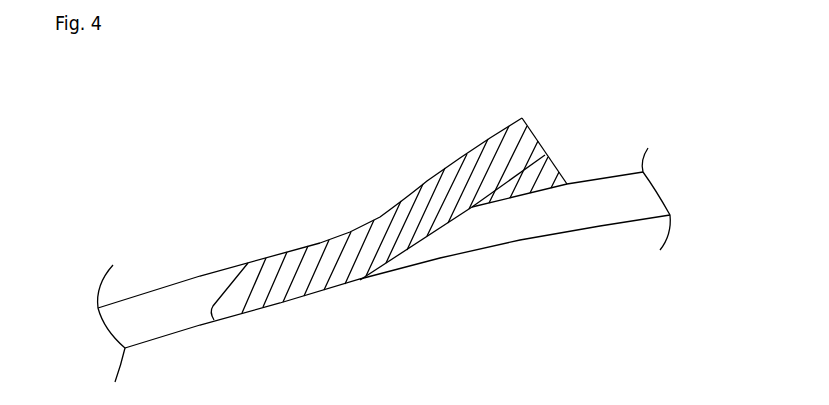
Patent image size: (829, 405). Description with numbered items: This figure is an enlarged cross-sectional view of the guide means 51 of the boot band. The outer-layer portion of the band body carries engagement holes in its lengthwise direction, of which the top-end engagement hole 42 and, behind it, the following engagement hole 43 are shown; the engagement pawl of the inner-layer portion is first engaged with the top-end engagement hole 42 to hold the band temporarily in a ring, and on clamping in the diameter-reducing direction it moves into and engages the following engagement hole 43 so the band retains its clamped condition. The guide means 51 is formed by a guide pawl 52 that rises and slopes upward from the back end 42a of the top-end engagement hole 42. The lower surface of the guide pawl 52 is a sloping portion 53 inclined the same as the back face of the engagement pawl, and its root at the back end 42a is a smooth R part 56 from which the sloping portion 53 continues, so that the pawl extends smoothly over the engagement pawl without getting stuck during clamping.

The top-end engagement hole 42 is at (598, 192).
The back end of the top-end engagement hole 42a is at (412, 258).
The following engagement hole 43 is at (160, 300).
The guide means 51 is at (462, 122).
The guide pawl 52 is at (424, 181).
The sloping portion 53 is at (472, 207).
The R part 56 is at (373, 272).